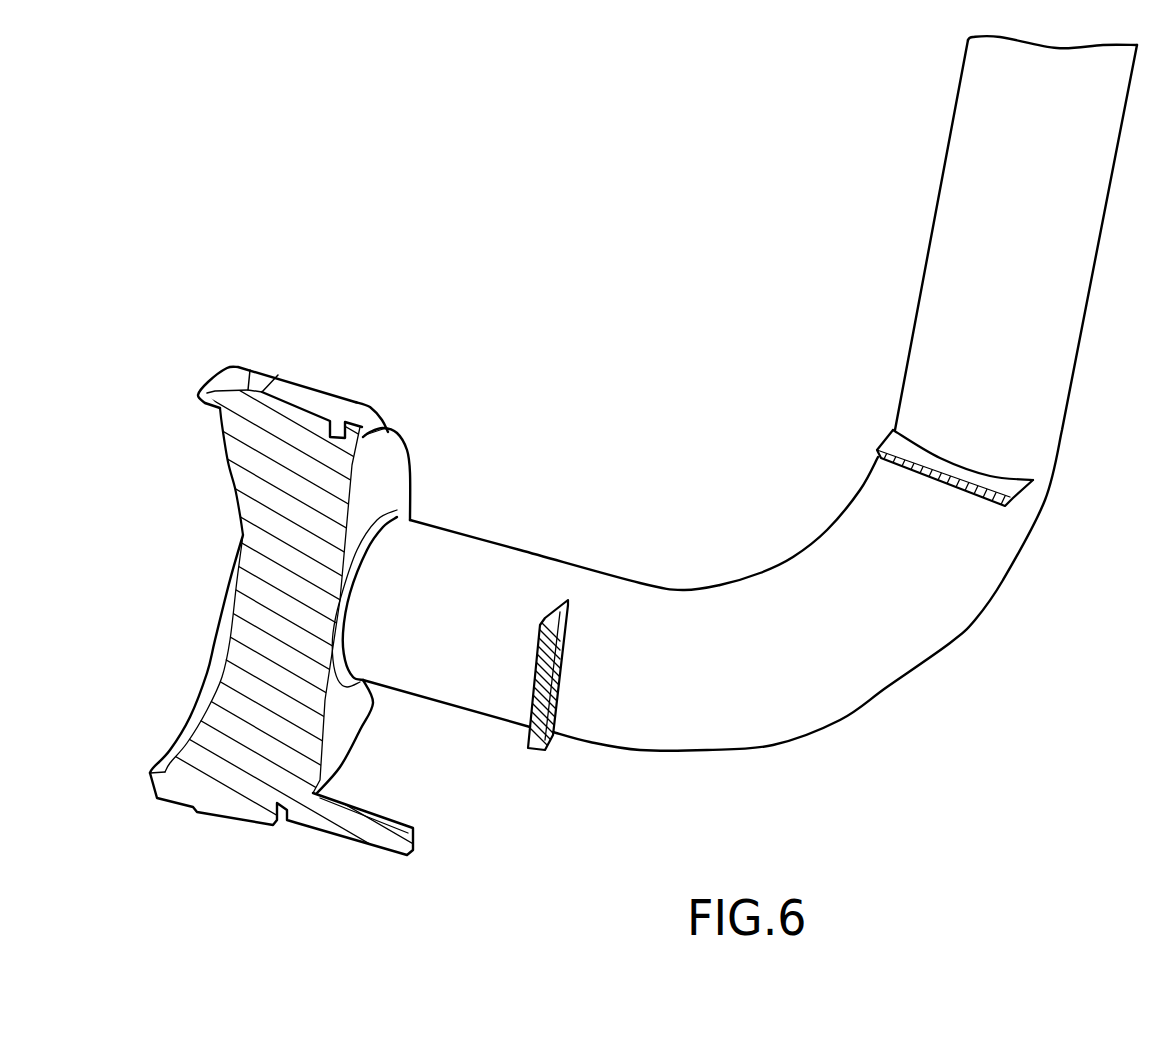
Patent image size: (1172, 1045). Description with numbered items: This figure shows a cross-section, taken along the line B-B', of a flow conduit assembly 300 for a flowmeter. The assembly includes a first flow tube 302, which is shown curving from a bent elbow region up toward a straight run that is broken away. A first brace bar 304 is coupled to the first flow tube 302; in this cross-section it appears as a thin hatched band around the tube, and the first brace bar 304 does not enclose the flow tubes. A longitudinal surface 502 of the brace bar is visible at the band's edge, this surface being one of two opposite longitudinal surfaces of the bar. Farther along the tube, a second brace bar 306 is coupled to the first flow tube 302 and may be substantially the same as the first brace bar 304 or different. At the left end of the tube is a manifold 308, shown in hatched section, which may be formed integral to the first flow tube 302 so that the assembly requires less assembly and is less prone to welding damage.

The flow conduit assembly 300 is at (643, 470).
The first flow tube 302 is at (750, 393).
The first brace bar 304 is at (896, 470).
The brace bar 306 is at (582, 619).
The manifold 308 is at (280, 591).
The longitudinal surface 502 is at (1025, 455).